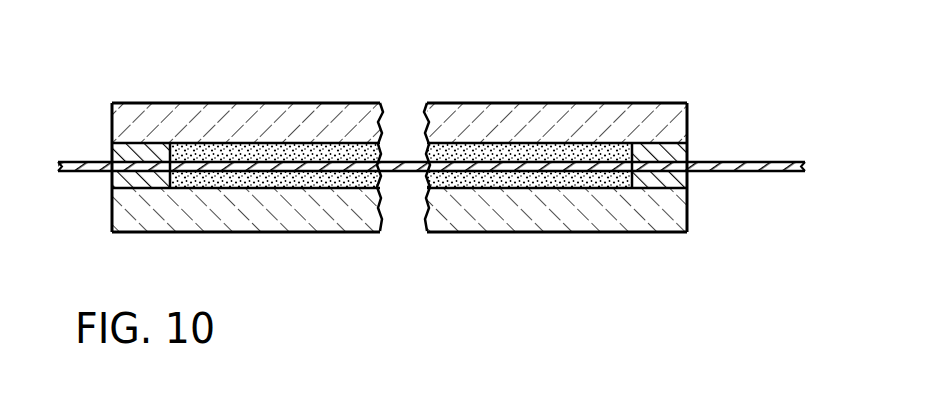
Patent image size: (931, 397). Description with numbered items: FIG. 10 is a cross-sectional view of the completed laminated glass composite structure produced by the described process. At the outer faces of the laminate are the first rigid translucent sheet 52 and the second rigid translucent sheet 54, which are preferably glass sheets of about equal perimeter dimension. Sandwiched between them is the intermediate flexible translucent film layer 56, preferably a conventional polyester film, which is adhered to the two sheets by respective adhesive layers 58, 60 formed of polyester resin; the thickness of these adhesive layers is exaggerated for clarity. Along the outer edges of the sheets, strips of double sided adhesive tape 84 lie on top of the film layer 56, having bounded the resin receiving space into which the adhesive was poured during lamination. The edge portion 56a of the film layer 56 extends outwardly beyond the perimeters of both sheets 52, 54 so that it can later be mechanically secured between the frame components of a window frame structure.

The first rigid translucent sheet 52 is at (508, 232).
The second rigid translucent sheet 54 is at (558, 102).
The intermediate flexible translucent film layer 56 is at (320, 160).
The edge portion 56a is at (80, 162).
The adhesive layer 58 is at (290, 180).
The adhesive layer 60 is at (226, 150).
The double sided adhesive tape 84 is at (138, 145).